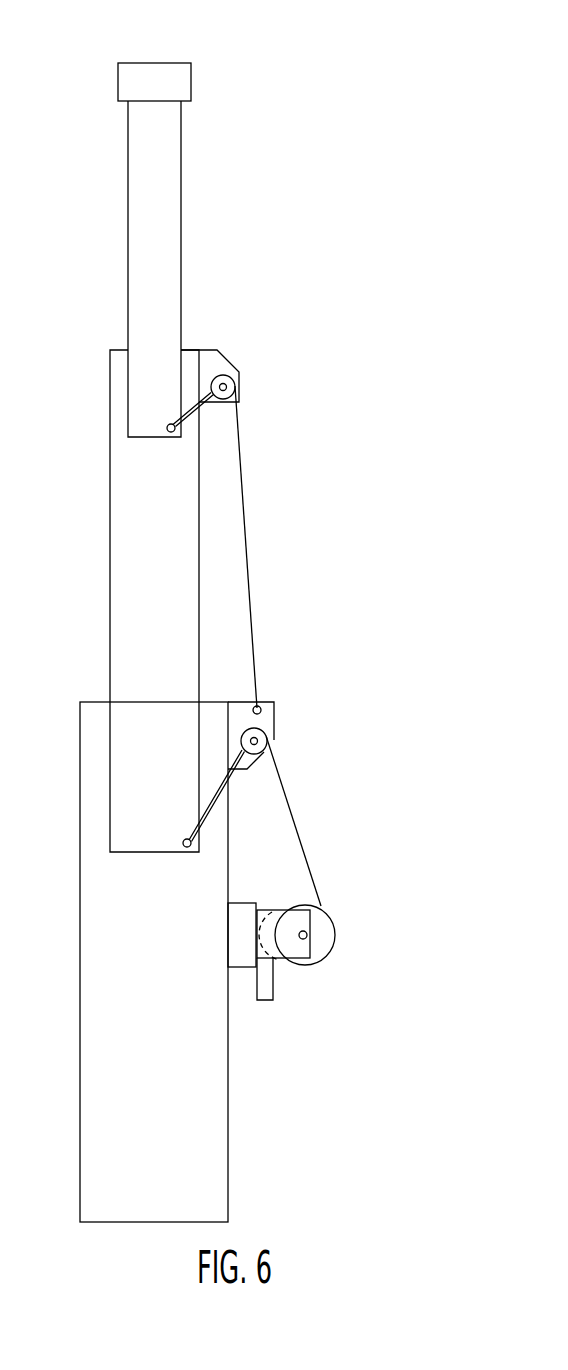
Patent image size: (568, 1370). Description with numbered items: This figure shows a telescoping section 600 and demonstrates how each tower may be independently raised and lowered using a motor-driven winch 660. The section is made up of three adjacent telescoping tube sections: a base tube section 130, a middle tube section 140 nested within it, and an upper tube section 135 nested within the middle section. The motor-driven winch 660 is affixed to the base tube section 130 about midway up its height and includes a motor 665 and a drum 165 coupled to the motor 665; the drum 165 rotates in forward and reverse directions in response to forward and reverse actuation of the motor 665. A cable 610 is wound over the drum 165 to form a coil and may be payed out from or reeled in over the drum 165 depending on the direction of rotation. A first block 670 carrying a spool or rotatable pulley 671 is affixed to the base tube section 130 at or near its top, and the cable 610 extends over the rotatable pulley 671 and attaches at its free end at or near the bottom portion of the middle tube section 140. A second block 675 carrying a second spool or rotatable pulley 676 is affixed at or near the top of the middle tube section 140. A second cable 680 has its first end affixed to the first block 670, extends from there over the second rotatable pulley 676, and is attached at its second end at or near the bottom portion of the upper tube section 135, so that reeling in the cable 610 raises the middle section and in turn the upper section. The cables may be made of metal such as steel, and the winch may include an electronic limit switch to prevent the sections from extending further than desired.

The telescoping section 600 is at (382, 103).
The upper tube section 135 is at (165, 217).
The middle tube section 140 is at (130, 567).
The base tube section 130 is at (193, 1067).
The second block 675 is at (215, 360).
The second spool or rotatable pulley 676 is at (230, 390).
The second cable 680 is at (245, 485).
The first block 670 is at (267, 720).
The spool or rotatable pulley 671 is at (263, 730).
The cable 610 is at (297, 818).
The motor-driven winch 660 is at (299, 968).
The motor 665 is at (263, 1000).
The drum 165 is at (327, 933).